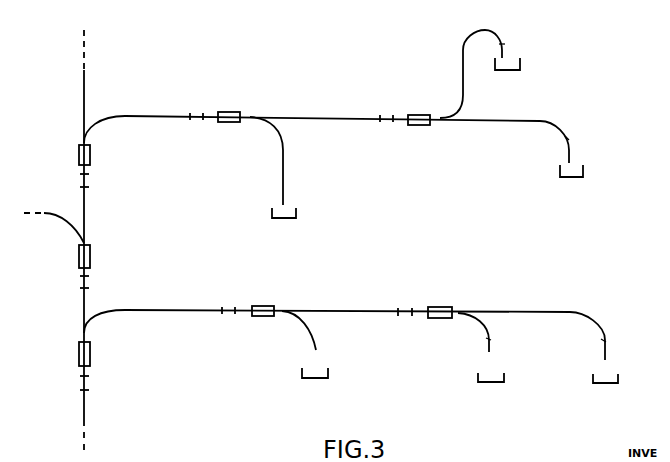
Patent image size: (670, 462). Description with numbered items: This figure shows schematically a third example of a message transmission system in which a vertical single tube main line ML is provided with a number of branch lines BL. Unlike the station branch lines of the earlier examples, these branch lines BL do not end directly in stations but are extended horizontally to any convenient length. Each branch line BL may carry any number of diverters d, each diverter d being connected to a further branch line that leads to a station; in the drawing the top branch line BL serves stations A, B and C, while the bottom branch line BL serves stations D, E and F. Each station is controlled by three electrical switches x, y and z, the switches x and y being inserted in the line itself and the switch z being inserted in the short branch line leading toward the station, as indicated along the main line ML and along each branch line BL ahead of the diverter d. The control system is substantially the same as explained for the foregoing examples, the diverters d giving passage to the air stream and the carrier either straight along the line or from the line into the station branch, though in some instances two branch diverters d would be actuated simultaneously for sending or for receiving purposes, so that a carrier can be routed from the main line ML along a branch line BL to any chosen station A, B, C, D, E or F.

The main line ML is at (87, 94).
The branch line BL is at (135, 117).
The diverter d is at (265, 229).
The electrical switch x is at (246, 235).
The electrical switch y is at (239, 242).
The electrical switch z is at (280, 140).
The station A is at (277, 221).
The station B is at (500, 72).
The station C is at (566, 178).
The station D is at (307, 379).
The station E is at (483, 383).
The station F is at (597, 384).